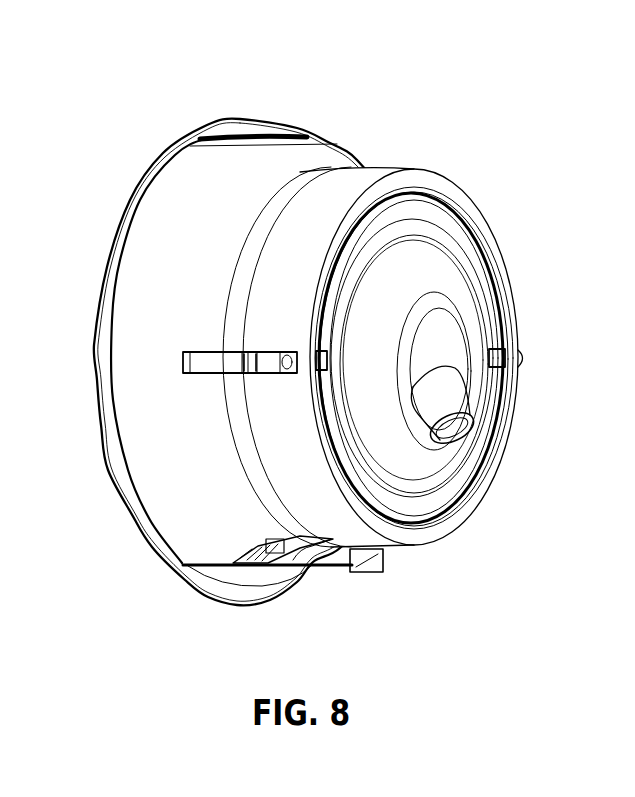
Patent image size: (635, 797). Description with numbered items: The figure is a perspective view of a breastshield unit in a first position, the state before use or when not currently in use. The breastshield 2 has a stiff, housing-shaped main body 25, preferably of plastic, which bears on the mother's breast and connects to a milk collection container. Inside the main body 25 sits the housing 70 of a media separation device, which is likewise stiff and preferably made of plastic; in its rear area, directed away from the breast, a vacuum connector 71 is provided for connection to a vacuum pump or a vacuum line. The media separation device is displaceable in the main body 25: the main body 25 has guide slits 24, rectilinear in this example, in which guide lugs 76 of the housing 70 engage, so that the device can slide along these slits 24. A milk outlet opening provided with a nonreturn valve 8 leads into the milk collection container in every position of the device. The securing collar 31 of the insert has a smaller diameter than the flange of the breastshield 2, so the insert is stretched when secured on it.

The breastshield 2 is at (322, 344).
The securing collar 31 is at (171, 144).
The main body 25 is at (318, 160).
The housing 70 is at (413, 278).
The vacuum connector 71 is at (470, 423).
The guide slits 24 is at (217, 365).
The guide lugs 76 is at (268, 362).
The nonreturn valve 8 is at (385, 556).